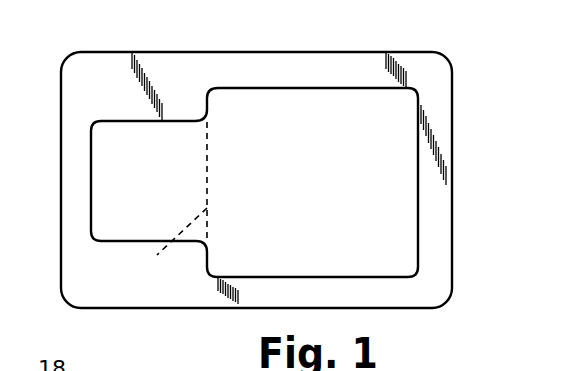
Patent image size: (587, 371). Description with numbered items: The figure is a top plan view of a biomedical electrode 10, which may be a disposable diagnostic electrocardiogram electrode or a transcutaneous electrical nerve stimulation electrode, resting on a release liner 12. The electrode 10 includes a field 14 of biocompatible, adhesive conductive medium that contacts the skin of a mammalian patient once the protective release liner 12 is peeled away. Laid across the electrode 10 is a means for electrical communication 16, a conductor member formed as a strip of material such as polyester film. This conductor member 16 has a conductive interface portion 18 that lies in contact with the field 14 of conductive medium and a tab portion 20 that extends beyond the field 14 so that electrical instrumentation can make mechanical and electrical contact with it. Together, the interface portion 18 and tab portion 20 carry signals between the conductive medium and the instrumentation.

The electrode 10 is at (346, 83).
The release liner 12 is at (437, 78).
The field of conductive medium 14 is at (175, 202).
The means for electrical communication 16 is at (407, 217).
The conductive interface portion 18 is at (222, 258).
The tab portion 20 is at (100, 192).